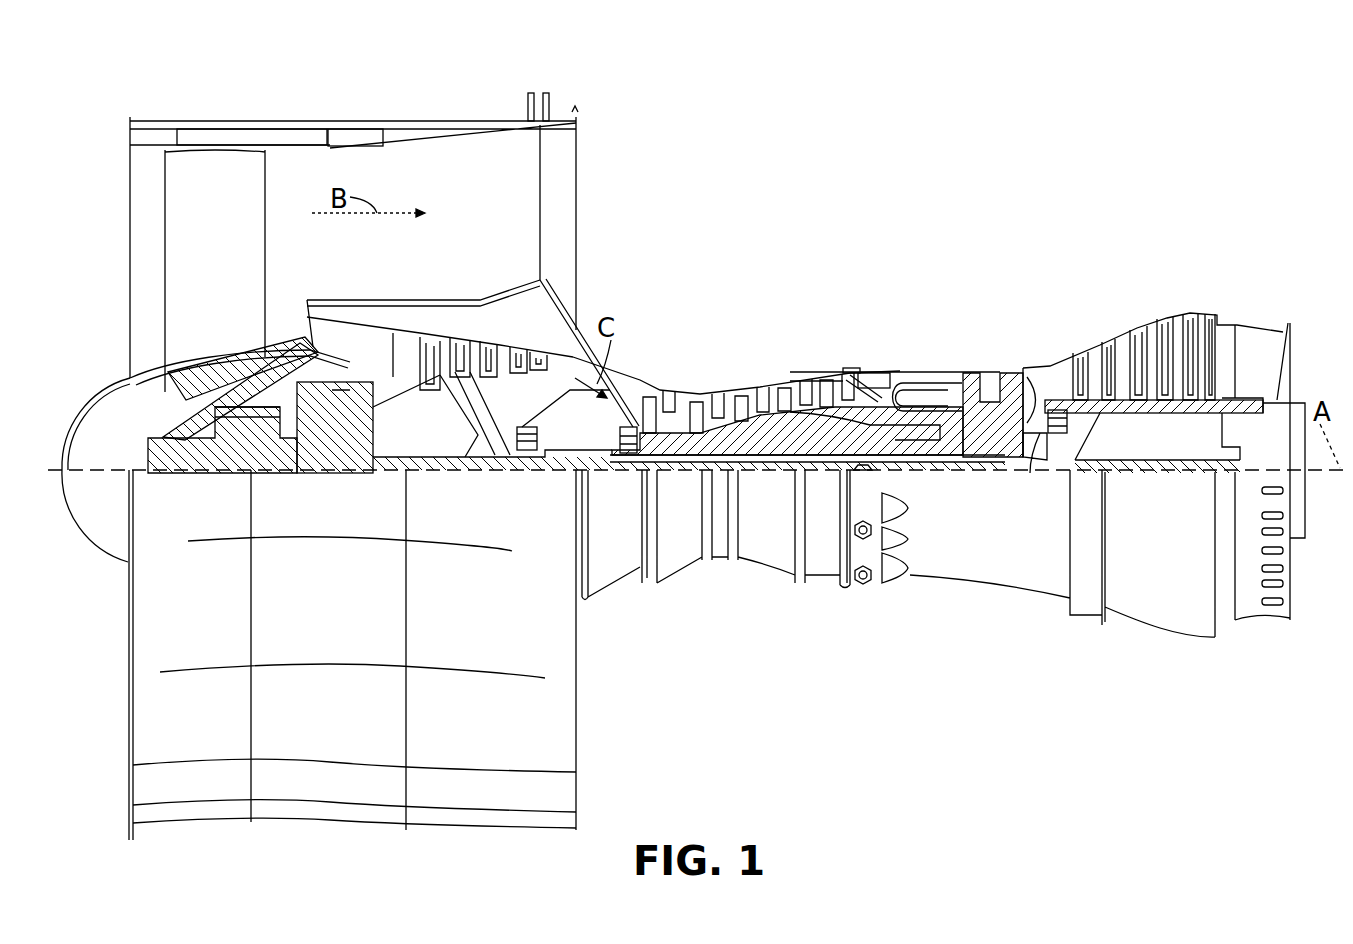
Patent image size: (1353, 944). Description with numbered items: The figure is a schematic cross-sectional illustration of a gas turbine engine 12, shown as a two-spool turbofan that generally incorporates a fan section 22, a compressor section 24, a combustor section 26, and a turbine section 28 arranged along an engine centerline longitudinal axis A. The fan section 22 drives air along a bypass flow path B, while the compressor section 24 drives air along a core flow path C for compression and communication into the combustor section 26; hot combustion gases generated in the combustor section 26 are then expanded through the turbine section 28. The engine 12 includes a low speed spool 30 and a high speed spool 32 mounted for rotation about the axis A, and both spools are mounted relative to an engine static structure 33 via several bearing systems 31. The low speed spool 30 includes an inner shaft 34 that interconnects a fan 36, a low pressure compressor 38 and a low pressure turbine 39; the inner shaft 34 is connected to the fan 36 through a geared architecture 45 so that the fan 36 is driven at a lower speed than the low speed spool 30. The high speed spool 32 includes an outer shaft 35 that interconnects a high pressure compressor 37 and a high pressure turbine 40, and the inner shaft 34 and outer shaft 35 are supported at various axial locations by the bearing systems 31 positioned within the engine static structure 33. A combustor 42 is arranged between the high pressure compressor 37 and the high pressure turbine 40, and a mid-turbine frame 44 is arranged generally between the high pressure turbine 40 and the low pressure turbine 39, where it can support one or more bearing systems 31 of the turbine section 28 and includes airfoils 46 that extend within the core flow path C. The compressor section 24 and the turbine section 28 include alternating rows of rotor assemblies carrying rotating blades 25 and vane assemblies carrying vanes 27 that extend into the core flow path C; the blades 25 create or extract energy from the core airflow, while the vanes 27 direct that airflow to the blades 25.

The gas turbine engine 12 is at (1058, 168).
The fan section 22 is at (228, 118).
The compressor section 24 is at (628, 372).
The blades 25 is at (420, 332).
The combustor section 26 is at (915, 372).
The vanes 27 is at (450, 381).
The turbine section 28 is at (1120, 256).
The low speed spool 30 is at (773, 480).
The bearing systems 31 is at (215, 473).
The high speed spool 32 is at (788, 393).
The engine static structure 33 is at (822, 587).
The inner shaft 34 is at (613, 471).
The outer shaft 35 is at (933, 467).
The fan 36 is at (231, 247).
The high pressure compressor 37 is at (712, 399).
The low pressure compressor 38 is at (490, 337).
The low pressure turbine 39 is at (1152, 336).
The high pressure turbine 40 is at (987, 370).
The combustor 42 is at (880, 392).
The mid-turbine frame 44 is at (1045, 356).
The geared architecture 45 is at (343, 473).
The airfoils 46 is at (1036, 378).